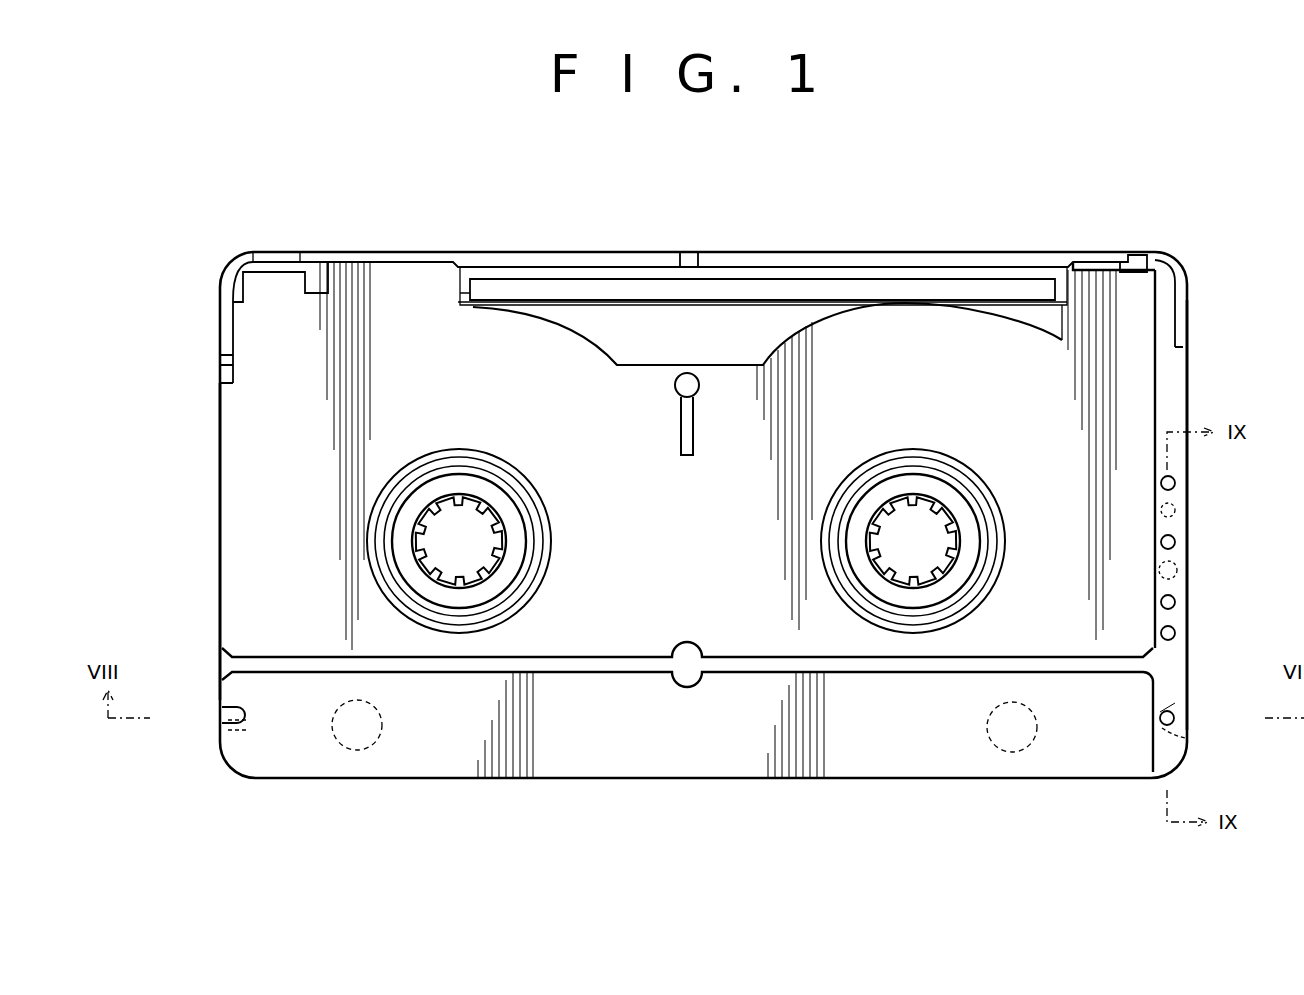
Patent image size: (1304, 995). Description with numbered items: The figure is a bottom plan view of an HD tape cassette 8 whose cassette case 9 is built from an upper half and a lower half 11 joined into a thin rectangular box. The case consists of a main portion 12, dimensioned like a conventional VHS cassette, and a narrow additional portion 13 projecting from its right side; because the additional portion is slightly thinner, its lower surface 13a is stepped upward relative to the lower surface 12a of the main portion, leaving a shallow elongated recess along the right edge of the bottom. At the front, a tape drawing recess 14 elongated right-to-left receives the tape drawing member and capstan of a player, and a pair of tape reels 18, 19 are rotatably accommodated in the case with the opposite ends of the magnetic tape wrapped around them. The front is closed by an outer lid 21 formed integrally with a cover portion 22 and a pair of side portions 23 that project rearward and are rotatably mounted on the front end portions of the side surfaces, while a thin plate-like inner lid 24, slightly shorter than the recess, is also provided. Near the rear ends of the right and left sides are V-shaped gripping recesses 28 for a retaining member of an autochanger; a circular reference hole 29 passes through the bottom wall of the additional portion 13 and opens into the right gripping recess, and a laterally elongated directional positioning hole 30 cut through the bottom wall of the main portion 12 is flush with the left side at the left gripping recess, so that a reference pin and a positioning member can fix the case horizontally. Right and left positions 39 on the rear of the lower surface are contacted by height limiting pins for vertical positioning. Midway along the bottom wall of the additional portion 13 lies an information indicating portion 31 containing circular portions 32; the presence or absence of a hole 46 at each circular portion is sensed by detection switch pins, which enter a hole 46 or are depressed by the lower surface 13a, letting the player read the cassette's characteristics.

The tape cassette 8 is at (978, 222).
The cassette case 9 is at (220, 404).
The lower half 11 is at (232, 486).
The main portion 12 is at (275, 442).
The lower surface of the main portion 12a is at (265, 527).
The additional portion 13 is at (1170, 372).
The lower surface of the additional portion 13a is at (1177, 412).
The tape drawing recess 14 is at (590, 342).
The tape reel 18 is at (963, 565).
The tape reel 19 is at (507, 563).
The outer lid 21 is at (722, 252).
The cover portion 22 is at (796, 256).
The side portions 23 is at (225, 312).
The inner lid 24 is at (558, 285).
The gripping recesses 28 is at (1178, 732).
The reference hole 29 is at (1175, 716).
The directional positioning hole 30 is at (230, 712).
The information indicating portion 31 is at (1173, 558).
The circular portions 32 is at (1175, 510).
The positions 39 is at (380, 734).
The hole 46 is at (1173, 483).